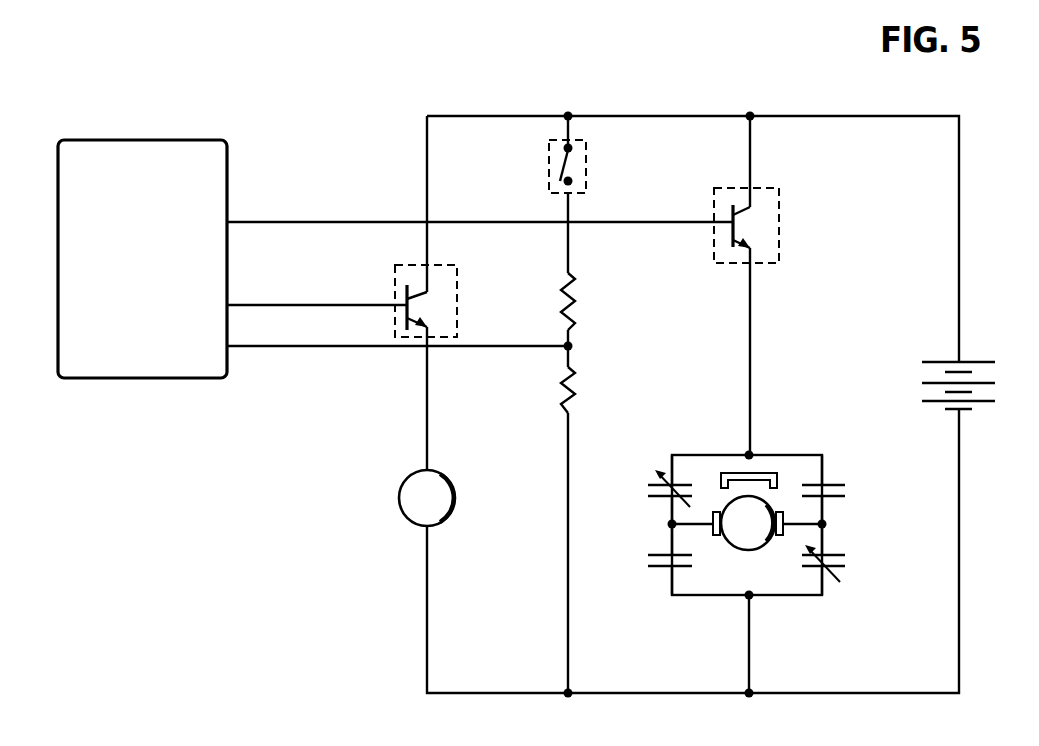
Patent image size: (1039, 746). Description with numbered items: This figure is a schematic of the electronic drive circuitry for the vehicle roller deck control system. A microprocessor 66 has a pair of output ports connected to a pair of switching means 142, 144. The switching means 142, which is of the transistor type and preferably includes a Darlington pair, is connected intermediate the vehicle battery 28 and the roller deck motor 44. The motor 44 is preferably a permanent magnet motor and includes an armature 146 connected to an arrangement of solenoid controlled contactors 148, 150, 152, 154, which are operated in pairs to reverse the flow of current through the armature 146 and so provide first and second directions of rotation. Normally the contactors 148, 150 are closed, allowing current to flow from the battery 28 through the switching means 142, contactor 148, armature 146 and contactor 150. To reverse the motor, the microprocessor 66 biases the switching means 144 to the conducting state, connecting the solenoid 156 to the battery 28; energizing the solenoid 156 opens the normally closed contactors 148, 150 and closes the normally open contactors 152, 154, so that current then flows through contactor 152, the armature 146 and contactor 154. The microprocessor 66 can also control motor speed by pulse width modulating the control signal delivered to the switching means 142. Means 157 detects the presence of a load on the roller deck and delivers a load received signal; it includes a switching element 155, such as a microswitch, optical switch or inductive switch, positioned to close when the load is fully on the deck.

The microprocessor 66 is at (229, 350).
The switching element 155 is at (587, 158).
The load detecting means 157 is at (606, 204).
The switching means 144 is at (457, 277).
The switching means 142 is at (779, 237).
The vehicle battery 28 is at (983, 362).
The solenoid 156 is at (446, 477).
The roller deck motor 44 is at (800, 447).
The armature 146 is at (757, 538).
The contactor 148 is at (655, 470).
The contactor 154 is at (658, 568).
The contactor 152 is at (846, 487).
The contactor 150 is at (842, 556).